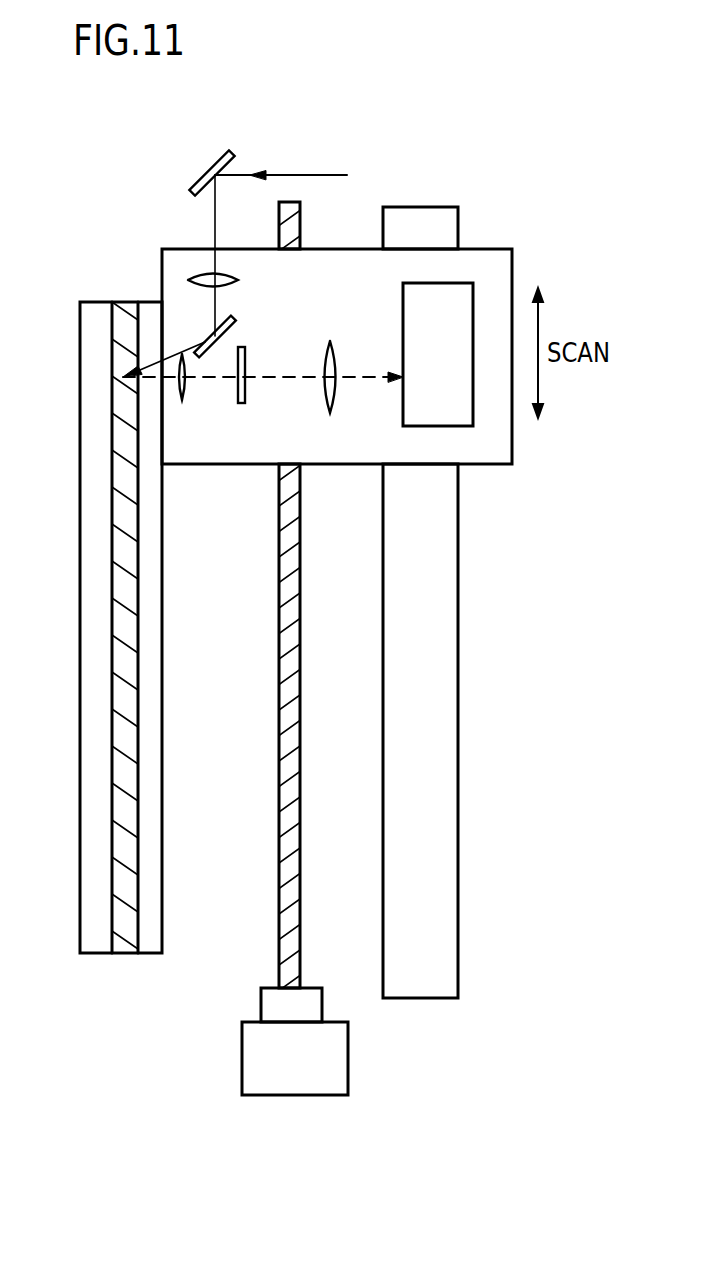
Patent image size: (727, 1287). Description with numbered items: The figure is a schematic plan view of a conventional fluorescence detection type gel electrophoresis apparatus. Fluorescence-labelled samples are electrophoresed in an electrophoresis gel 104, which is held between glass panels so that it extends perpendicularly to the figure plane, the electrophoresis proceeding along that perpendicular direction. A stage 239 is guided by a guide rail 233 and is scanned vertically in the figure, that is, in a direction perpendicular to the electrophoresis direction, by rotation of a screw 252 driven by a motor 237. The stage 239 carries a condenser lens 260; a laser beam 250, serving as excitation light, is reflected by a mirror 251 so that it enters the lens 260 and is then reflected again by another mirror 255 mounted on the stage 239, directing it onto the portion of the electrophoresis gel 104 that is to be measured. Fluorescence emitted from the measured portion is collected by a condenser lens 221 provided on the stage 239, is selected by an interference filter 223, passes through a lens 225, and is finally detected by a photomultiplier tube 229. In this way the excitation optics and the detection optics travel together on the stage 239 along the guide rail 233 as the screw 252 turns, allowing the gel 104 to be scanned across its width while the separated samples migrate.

The electrophoresis gel 104 is at (108, 565).
The condenser lens 221 is at (180, 400).
The interference filter 223 is at (238, 390).
The lens 225 is at (323, 397).
The photomultiplier tube 229 is at (473, 310).
The guide rail 233 is at (458, 582).
The motor 237 is at (242, 1059).
The stage 239 is at (512, 250).
The laser beam 250 is at (280, 175).
The mirror 251 is at (195, 177).
The screw 252 is at (300, 225).
The mirror 255 is at (228, 332).
The condenser lens 260 is at (202, 275).